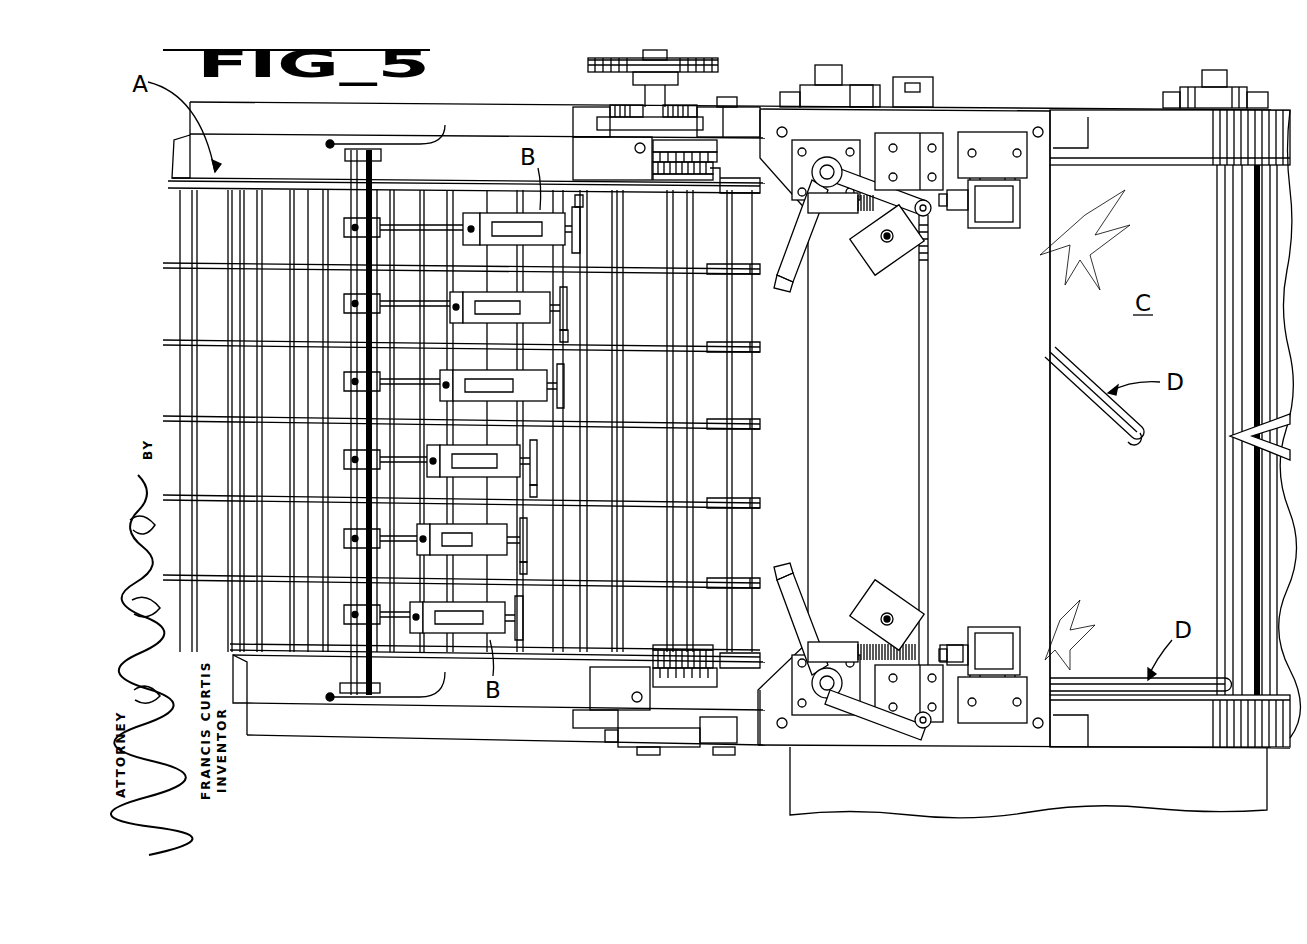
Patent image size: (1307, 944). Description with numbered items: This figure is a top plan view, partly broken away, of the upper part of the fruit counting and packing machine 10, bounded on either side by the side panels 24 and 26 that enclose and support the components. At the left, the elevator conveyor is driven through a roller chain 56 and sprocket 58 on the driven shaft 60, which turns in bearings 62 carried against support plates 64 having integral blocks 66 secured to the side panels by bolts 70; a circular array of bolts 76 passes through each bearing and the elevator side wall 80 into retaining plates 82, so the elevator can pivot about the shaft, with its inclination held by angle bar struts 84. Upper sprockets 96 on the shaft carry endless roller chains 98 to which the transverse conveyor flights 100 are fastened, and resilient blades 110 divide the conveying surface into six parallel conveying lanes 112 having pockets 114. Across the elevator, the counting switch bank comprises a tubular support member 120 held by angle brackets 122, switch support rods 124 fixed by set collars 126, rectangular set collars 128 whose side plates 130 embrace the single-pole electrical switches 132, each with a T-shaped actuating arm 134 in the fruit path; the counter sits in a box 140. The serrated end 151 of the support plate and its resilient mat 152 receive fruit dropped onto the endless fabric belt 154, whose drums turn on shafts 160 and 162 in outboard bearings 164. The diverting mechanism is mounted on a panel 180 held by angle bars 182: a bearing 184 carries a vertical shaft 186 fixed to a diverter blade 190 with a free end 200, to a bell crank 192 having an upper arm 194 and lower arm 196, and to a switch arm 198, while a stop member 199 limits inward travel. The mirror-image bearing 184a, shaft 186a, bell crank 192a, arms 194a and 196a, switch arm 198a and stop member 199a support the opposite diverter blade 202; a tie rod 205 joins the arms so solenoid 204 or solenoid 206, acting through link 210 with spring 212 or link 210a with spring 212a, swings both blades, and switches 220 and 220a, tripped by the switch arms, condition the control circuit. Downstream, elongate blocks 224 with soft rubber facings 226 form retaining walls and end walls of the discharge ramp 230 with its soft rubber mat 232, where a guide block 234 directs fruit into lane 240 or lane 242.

The fruit counting and packing machine 10 is at (1005, 78).
The side panel 24 is at (1028, 109).
The side panel 26 is at (1045, 748).
The roller chain 56 is at (705, 68).
The sprocket 58 is at (630, 58).
The driven shaft 60 is at (658, 50).
The bearing 62 is at (680, 772).
The support plate 64 is at (573, 125).
The block 66 is at (728, 107).
The bolt 70 is at (727, 97).
The bolt 76 is at (630, 105).
The side wall 80 is at (297, 133).
The retaining plate 82 is at (710, 150).
The angle bar strut 84 is at (363, 118).
The upper sprocket 96 is at (685, 180).
The roller chain 98 is at (700, 195).
The conveyor flight 100 is at (212, 208).
The resilient rectangular blade 110 is at (287, 418).
The conveying lane 112 is at (178, 233).
The pocket 114 is at (240, 225).
The tubular support member 120 is at (362, 168).
The angle bracket 122 is at (395, 146).
The switch support rod 124 is at (405, 240).
The set collar 126 is at (350, 236).
The rectangular set collar 128 is at (470, 236).
The side plate 130 is at (505, 246).
The single-pole electrical switch 132 is at (580, 205).
The T-shaped actuating arm 134 is at (578, 235).
The box 140 is at (978, 790).
The serrated end 151 is at (745, 285).
The resilient mat 152 is at (758, 397).
The endless fabric belt 154 is at (1098, 492).
The shaft 160 is at (832, 66).
The shaft 162 is at (1212, 70).
The outboard bearing 164 is at (850, 88).
The panel 180 is at (848, 390).
The angle bar 182 is at (1068, 128).
The bearing 184 is at (820, 150).
The vertical shaft 186 is at (827, 165).
The diverter blade 190 is at (1083, 390).
The bell crank 192 is at (808, 200).
The upper arm 194 is at (935, 212).
The lower arm 196 is at (785, 285).
The switch arm 198 is at (875, 190).
The stop member 199 is at (865, 250).
The free end 200 is at (1145, 435).
The diverter blade 202 is at (1118, 678).
The solenoid 204 is at (992, 225).
The tie rod 205 is at (930, 422).
The solenoid 206 is at (992, 650).
The link 210 is at (815, 205).
The spring 212 is at (862, 213).
The single pole electrical switch 220 is at (903, 148).
The elongate block 224 is at (1148, 155).
The soft rubber facing 226 is at (1135, 165).
The discharge ramp 230 is at (1270, 512).
The soft rubber mat 232 is at (1285, 528).
The guide block 234 is at (1245, 440).
The lane 240 is at (1215, 272).
The lane 242 is at (1228, 562).
The bearing 184a is at (822, 700).
The vertical shaft 186a is at (827, 698).
The bell crank 192a is at (810, 658).
The upper arm 194a is at (923, 728).
The lower arm 196a is at (860, 580).
The switch arm 198a is at (858, 705).
The stop member 199a is at (880, 600).
The link 210a is at (830, 645).
The spring 212a is at (922, 645).
The single pole electrical switch 220a is at (935, 705).